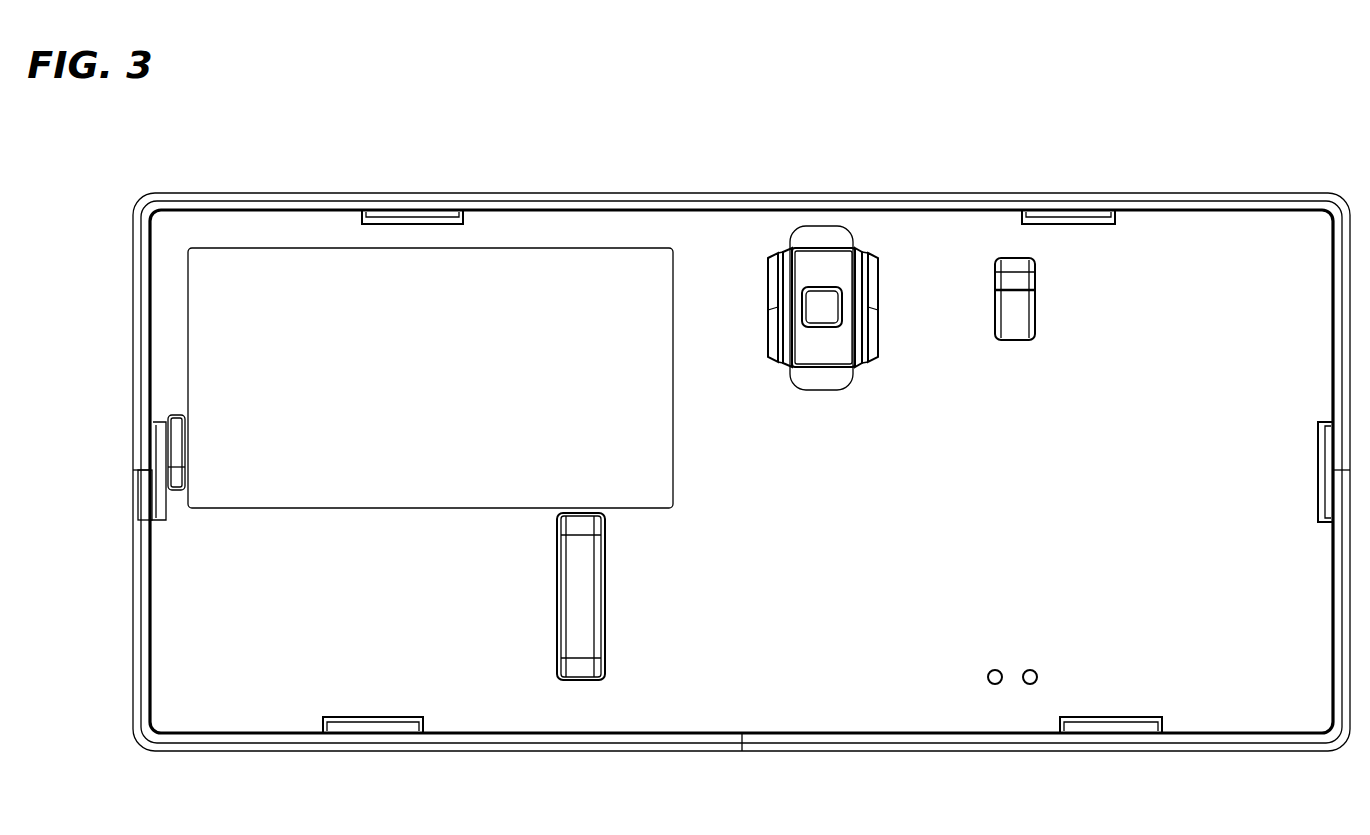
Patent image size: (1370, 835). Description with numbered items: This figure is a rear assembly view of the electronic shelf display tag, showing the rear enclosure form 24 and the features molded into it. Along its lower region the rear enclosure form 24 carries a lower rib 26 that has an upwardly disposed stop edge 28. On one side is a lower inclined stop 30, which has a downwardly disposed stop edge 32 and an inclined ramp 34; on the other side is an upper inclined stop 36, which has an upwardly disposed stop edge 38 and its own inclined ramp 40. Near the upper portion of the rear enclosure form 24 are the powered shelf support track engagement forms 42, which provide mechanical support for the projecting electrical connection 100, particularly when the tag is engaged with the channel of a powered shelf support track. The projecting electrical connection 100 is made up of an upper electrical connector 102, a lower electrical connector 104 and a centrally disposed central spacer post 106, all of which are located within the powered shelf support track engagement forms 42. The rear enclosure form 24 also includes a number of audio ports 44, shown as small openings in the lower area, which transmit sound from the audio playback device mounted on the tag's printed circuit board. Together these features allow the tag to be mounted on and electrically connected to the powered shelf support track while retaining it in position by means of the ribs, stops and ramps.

The rear enclosure form 24 is at (231, 192).
The lower rib 26 is at (578, 632).
The upwardly disposed stop edge 28 is at (582, 512).
The lower inclined stop 30 is at (165, 456).
The downwardly disposed stop edge 32 is at (178, 492).
The inclined ramp 34 is at (175, 438).
The upper inclined stop 36 is at (1019, 243).
The upwardly disposed stop edge 38 is at (1016, 265).
The inclined ramp 40 is at (1017, 320).
The powered shelf support track engagement forms 42 is at (768, 298).
The audio ports 44 is at (993, 685).
The projecting electrical connection 100 is at (801, 236).
The upper electrical connector 102 is at (812, 237).
The lower electrical connector 104 is at (816, 378).
The central spacer post 106 is at (837, 267).